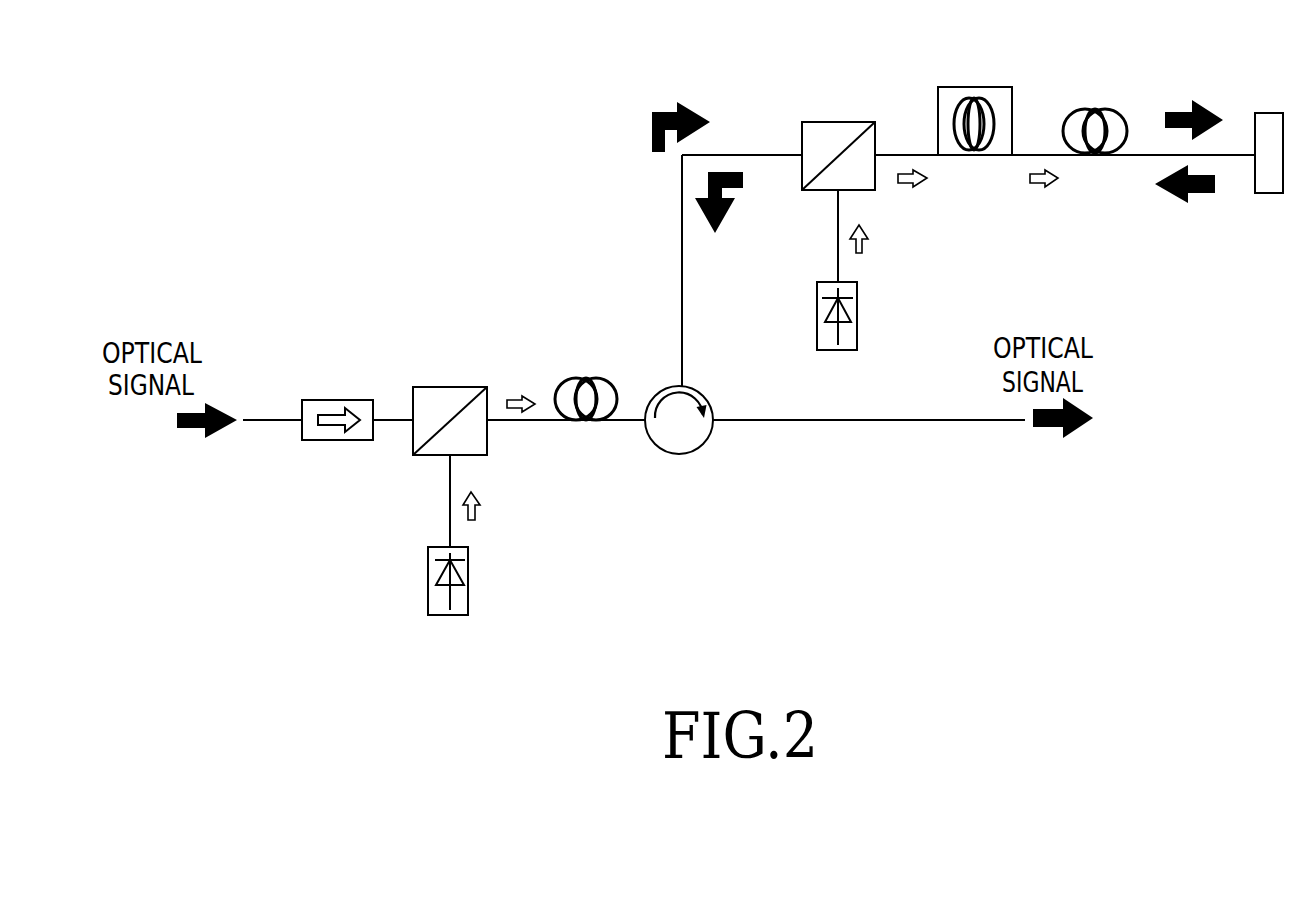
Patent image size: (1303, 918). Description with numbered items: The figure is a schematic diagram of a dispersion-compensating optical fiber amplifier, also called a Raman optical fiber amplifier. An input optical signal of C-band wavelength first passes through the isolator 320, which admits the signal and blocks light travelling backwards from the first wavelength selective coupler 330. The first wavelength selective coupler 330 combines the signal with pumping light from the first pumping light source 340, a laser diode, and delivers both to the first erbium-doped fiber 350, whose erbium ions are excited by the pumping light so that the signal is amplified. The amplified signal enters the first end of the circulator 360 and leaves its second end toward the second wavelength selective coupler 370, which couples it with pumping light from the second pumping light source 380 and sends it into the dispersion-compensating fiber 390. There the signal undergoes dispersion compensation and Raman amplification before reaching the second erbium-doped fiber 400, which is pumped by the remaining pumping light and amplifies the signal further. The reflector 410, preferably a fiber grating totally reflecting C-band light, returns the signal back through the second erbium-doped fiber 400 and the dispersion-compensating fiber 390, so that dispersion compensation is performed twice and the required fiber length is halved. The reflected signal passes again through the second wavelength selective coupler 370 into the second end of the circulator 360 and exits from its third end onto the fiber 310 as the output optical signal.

The fiber 310 is at (272, 419).
The isolator 320 is at (336, 400).
The first wavelength selective coupler 330 is at (451, 387).
The first pumping light source 340 is at (468, 578).
The first erbium-doped fiber 350 is at (584, 377).
The circulator 360 is at (677, 455).
The second wavelength selective coupler 370 is at (838, 122).
The second pumping light source 380 is at (857, 313).
The dispersion-compensating fiber 390 is at (973, 87).
The second erbium-doped fiber 400 is at (1095, 109).
The reflector 410 is at (1269, 113).